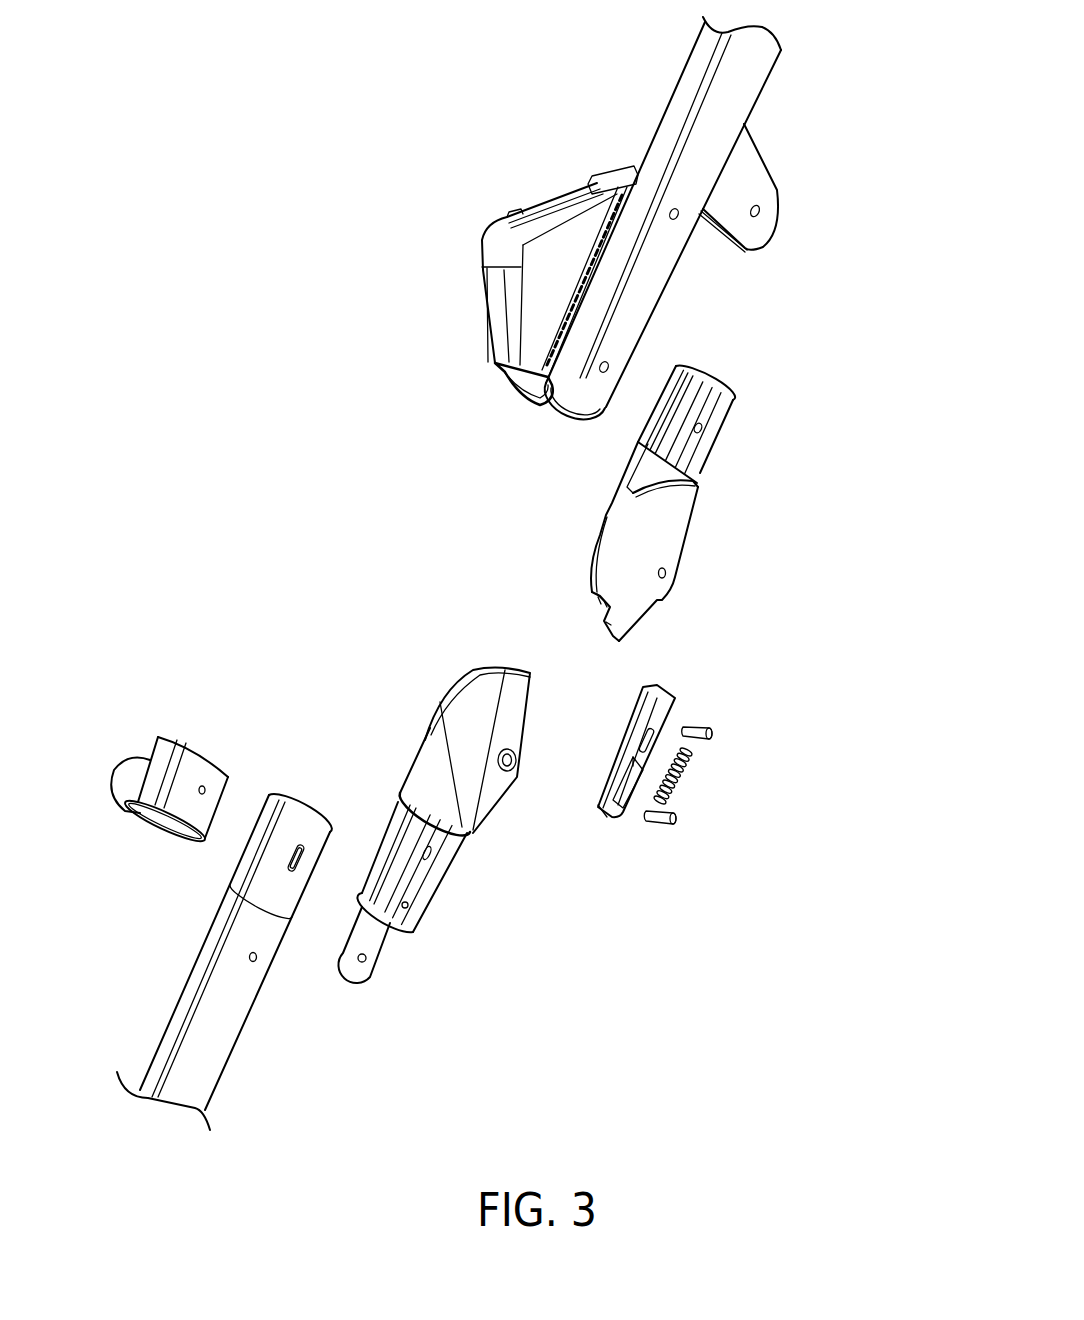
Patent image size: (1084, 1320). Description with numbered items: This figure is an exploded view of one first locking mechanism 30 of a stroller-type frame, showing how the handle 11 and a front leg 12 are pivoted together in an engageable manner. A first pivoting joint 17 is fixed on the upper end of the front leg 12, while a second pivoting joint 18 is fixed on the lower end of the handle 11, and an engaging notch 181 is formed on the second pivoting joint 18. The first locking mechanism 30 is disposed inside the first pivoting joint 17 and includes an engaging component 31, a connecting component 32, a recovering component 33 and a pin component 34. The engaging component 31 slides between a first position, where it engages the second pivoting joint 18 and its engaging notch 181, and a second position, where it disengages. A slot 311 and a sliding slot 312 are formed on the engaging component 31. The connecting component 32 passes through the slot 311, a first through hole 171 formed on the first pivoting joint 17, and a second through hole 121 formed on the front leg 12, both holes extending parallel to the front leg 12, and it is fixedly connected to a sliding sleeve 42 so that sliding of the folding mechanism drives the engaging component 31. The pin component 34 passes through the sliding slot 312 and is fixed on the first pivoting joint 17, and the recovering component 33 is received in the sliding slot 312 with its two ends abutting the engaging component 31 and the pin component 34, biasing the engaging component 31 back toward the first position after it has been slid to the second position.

The handle 11 is at (705, 137).
The front leg 12 is at (222, 1018).
The second through hole 121 is at (297, 843).
The first pivoting joint 17 is at (448, 780).
The first through hole 171 is at (429, 860).
The second pivoting joint 18 is at (665, 539).
The engaging notch 181 is at (604, 611).
The first locking mechanism 30 is at (853, 632).
The engaging component 31 is at (660, 711).
The slot 311 is at (645, 738).
The sliding slot 312 is at (630, 783).
The connecting component 32 is at (713, 733).
The recovering component 33 is at (681, 775).
The pin component 34 is at (677, 818).
The sliding sleeve 42 is at (193, 772).